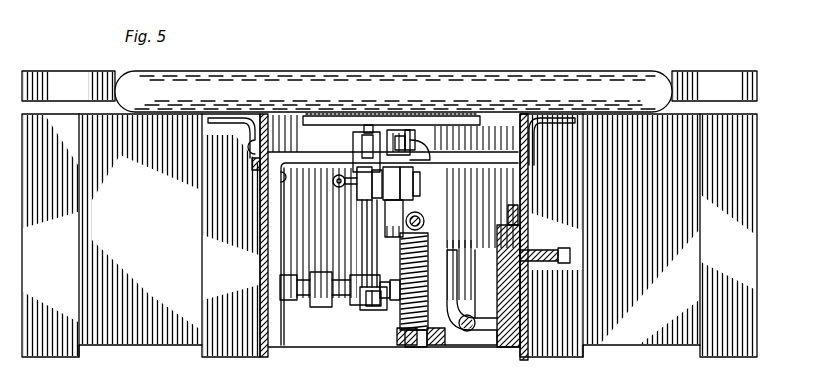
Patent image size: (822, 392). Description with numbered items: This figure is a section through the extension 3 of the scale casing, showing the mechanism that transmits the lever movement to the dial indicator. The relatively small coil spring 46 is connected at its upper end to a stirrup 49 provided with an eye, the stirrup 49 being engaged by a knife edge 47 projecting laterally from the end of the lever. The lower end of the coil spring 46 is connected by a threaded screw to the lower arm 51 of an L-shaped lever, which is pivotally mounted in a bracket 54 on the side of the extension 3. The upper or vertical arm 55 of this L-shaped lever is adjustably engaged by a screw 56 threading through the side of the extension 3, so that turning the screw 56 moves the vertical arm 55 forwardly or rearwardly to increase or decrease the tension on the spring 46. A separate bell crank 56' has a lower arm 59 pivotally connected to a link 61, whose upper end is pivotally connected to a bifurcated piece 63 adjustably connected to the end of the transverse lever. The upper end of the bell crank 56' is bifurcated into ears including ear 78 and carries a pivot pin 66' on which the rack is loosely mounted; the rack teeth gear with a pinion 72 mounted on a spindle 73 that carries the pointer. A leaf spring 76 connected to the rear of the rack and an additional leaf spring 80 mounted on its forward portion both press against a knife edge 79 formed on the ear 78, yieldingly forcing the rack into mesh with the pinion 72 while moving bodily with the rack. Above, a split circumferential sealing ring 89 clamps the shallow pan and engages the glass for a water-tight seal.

The extension 3 is at (528, 204).
The coil spring 46 is at (424, 250).
The knife edge 47 is at (420, 187).
The stirrup 49 is at (418, 198).
The lower arm 51 is at (437, 343).
The bracket 54 is at (489, 343).
The vertical arm 55 is at (478, 262).
The screw 56 is at (545, 242).
The bell crank 56' is at (363, 226).
The lower arm 59 is at (372, 328).
The link 61 is at (371, 252).
The bifurcated piece 63 is at (352, 190).
The pivot pin 66' is at (391, 105).
The pinion 72 is at (422, 150).
The spindle 73 is at (388, 127).
The leaf spring 76 is at (405, 140).
The ear 78 is at (395, 135).
The knife edge 79 is at (392, 158).
The leaf spring 80 is at (418, 155).
The sealing ring 89 is at (404, 84).